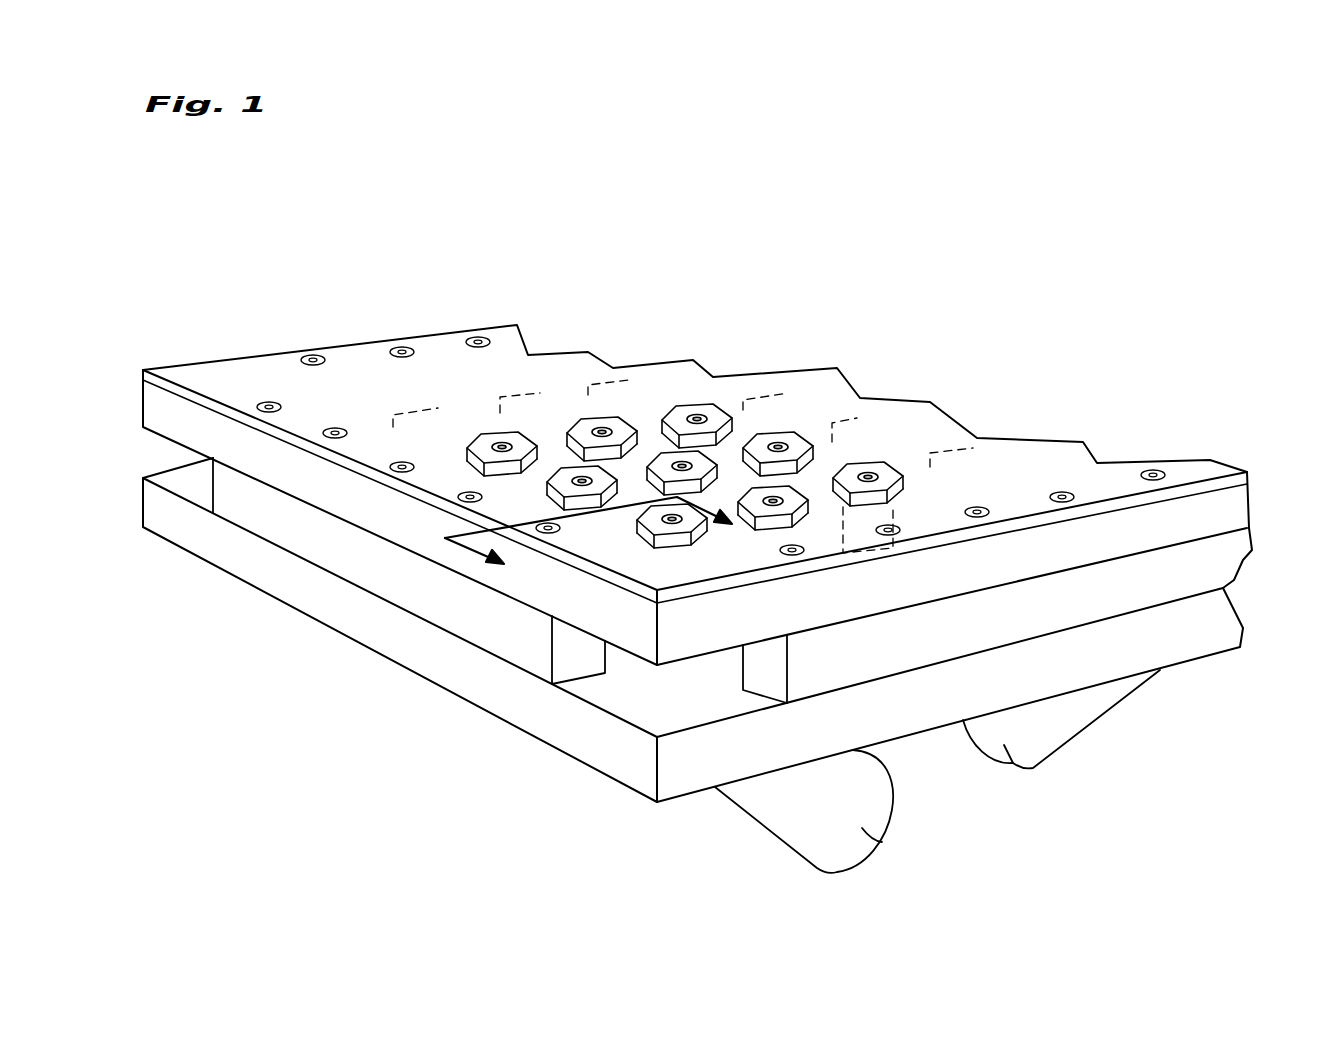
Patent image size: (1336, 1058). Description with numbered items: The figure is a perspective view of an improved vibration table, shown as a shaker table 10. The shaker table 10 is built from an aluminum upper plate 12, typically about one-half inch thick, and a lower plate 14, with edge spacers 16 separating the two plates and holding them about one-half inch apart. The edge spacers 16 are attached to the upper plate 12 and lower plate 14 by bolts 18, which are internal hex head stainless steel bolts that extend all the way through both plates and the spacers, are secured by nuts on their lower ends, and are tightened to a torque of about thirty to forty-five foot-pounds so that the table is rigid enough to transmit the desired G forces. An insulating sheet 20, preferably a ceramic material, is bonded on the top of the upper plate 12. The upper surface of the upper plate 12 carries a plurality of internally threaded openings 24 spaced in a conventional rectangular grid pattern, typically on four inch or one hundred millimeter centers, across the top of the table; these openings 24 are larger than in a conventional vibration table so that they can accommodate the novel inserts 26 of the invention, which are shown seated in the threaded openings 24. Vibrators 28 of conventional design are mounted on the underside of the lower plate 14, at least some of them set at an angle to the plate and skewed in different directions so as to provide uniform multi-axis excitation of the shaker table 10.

The shaker table 10 is at (776, 311).
The upper plate 12 is at (337, 497).
The lower plate 14 is at (337, 588).
The edge spacers 16 is at (340, 543).
The bolts 18 is at (268, 400).
The insulating sheet 20 is at (333, 460).
The openings 24 is at (892, 467).
The inserts 26 is at (643, 513).
The vibrators 28 is at (880, 840).